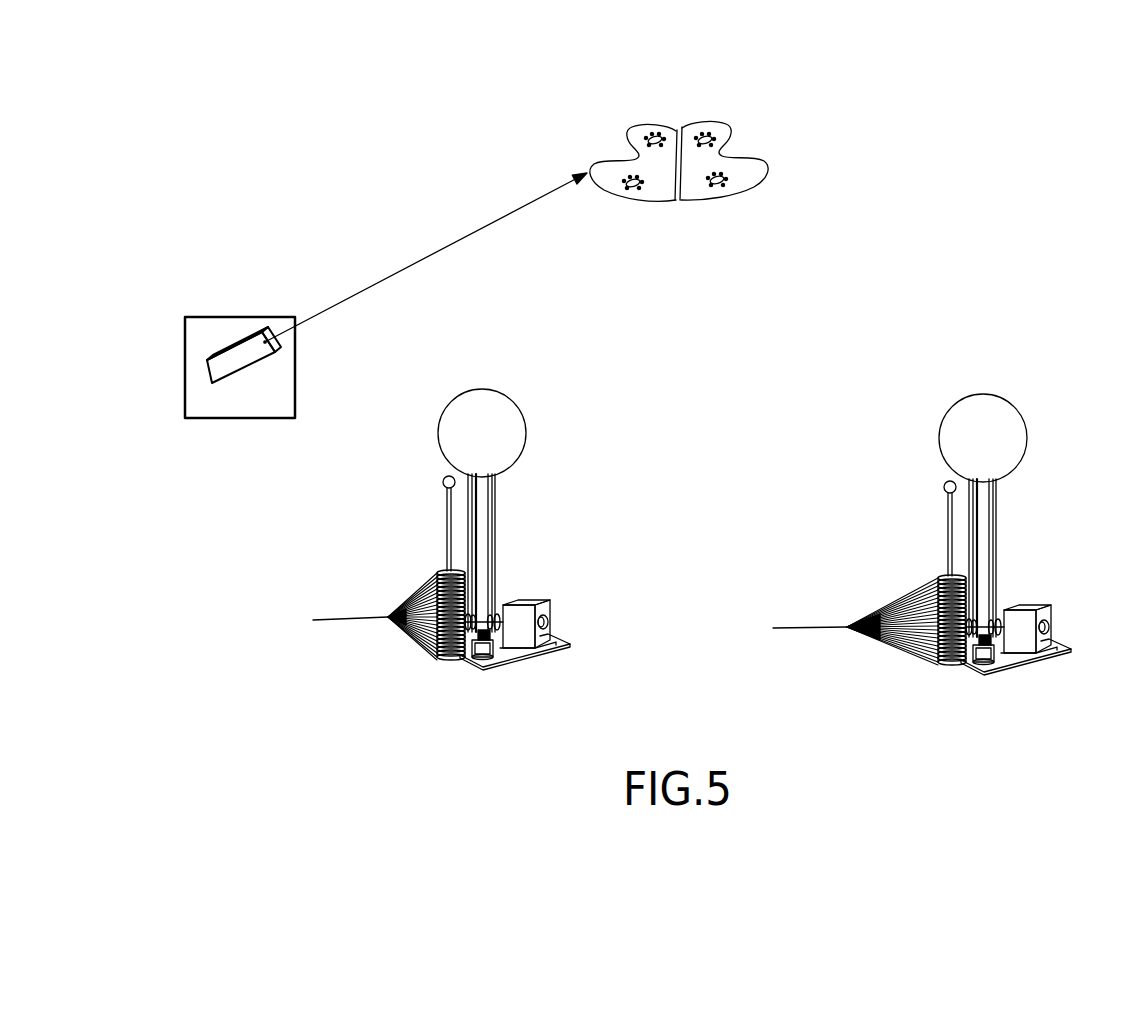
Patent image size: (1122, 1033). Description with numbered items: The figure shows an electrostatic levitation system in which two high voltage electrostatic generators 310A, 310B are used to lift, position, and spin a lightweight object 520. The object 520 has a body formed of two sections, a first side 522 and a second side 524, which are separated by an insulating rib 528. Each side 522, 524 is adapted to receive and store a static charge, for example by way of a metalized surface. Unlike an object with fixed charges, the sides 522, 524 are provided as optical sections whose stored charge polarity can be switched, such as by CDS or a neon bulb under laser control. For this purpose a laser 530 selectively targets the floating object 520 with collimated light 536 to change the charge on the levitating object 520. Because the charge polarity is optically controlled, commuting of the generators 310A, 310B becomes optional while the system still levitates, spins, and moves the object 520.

The object 520 is at (680, 146).
The first side 522 is at (603, 188).
The second side 524 is at (728, 193).
The insulating rib 528 is at (682, 128).
The laser 530 is at (277, 418).
The collimated light 536 is at (422, 262).
The electrostatic generator 310A is at (406, 690).
The electrostatic generator 310B is at (918, 690).